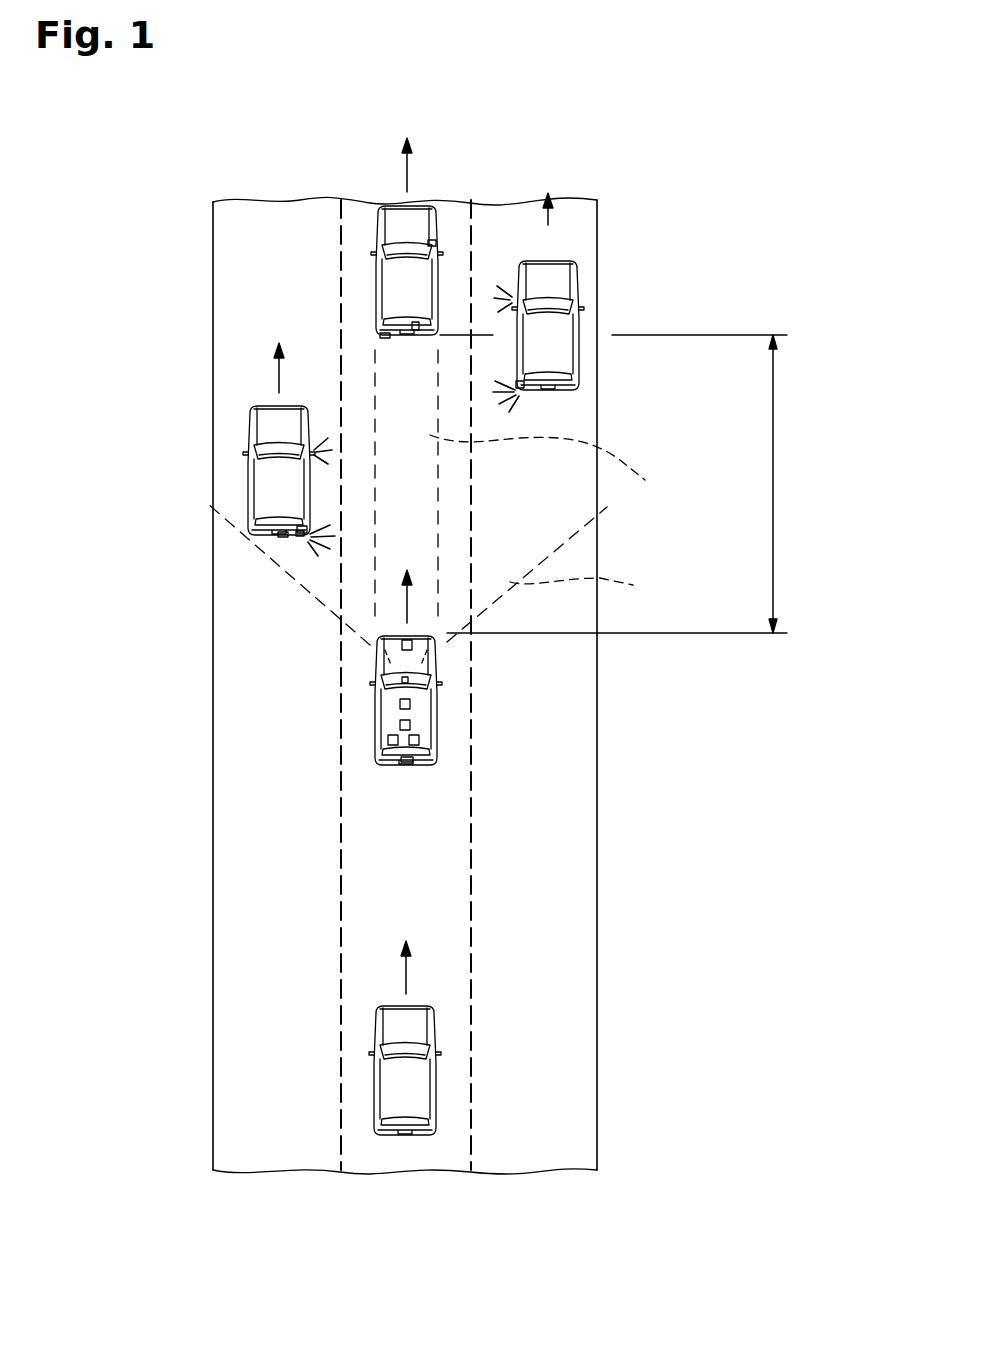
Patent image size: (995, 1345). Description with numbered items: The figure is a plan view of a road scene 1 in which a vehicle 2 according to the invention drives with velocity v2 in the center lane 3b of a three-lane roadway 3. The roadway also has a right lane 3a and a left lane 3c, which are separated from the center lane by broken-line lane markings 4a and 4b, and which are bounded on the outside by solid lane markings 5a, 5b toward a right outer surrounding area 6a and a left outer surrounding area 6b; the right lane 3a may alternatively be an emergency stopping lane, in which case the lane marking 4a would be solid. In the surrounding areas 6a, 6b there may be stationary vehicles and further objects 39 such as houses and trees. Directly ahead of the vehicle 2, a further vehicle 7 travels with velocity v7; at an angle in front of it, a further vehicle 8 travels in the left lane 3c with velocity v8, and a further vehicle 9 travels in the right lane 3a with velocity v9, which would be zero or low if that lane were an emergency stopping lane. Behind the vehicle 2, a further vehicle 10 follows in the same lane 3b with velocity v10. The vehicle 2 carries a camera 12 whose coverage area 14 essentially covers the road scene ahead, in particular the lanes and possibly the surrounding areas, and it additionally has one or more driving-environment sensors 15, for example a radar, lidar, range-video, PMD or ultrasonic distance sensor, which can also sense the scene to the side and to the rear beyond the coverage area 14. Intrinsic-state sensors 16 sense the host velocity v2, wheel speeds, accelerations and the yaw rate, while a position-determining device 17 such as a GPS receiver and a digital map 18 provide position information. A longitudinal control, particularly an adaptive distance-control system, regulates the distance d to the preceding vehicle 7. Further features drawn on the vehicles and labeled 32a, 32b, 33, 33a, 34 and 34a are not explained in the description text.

The road scene 1 is at (650, 165).
The vehicle 2 is at (420, 723).
The roadway 3 is at (597, 1122).
The right lane 3a is at (535, 1147).
The center lane 3b is at (397, 1148).
The left lane 3c is at (255, 1163).
The lane marking 4a is at (470, 1152).
The lane marking 4b is at (340, 1150).
The solid lane marking 5a is at (597, 953).
The solid lane marking 5b is at (212, 995).
The right outer surrounding area 6a is at (622, 1042).
The left outer surrounding area 6b is at (185, 1075).
The further vehicle 7 is at (393, 215).
The further vehicle 8 is at (257, 420).
The further vehicle 9 is at (572, 275).
The further vehicle 10 is at (418, 1112).
The camera 12 is at (430, 678).
The coverage area 14 is at (589, 588).
The driving-environment sensor 15 is at (402, 644).
The intrinsic-state sensor 16 is at (400, 724).
The position-determining device 17 is at (390, 740).
The digital map 18 is at (418, 745).
The rear left sensor/light 32a is at (385, 339).
The rear right sensor/light 32b is at (432, 243).
The turn signal indicator 33 is at (375, 330).
The side turn signal indicator 33a is at (513, 300).
The rear light 34 is at (418, 328).
The side mirror indicator 34a is at (308, 450).
The further objects 39 is at (554, 465).
The distance d is at (773, 485).
The velocity v2 is at (408, 608).
The velocity v7 is at (380, 197).
The velocity v8 is at (279, 375).
The velocity v9 is at (548, 230).
The velocity v10 is at (407, 975).